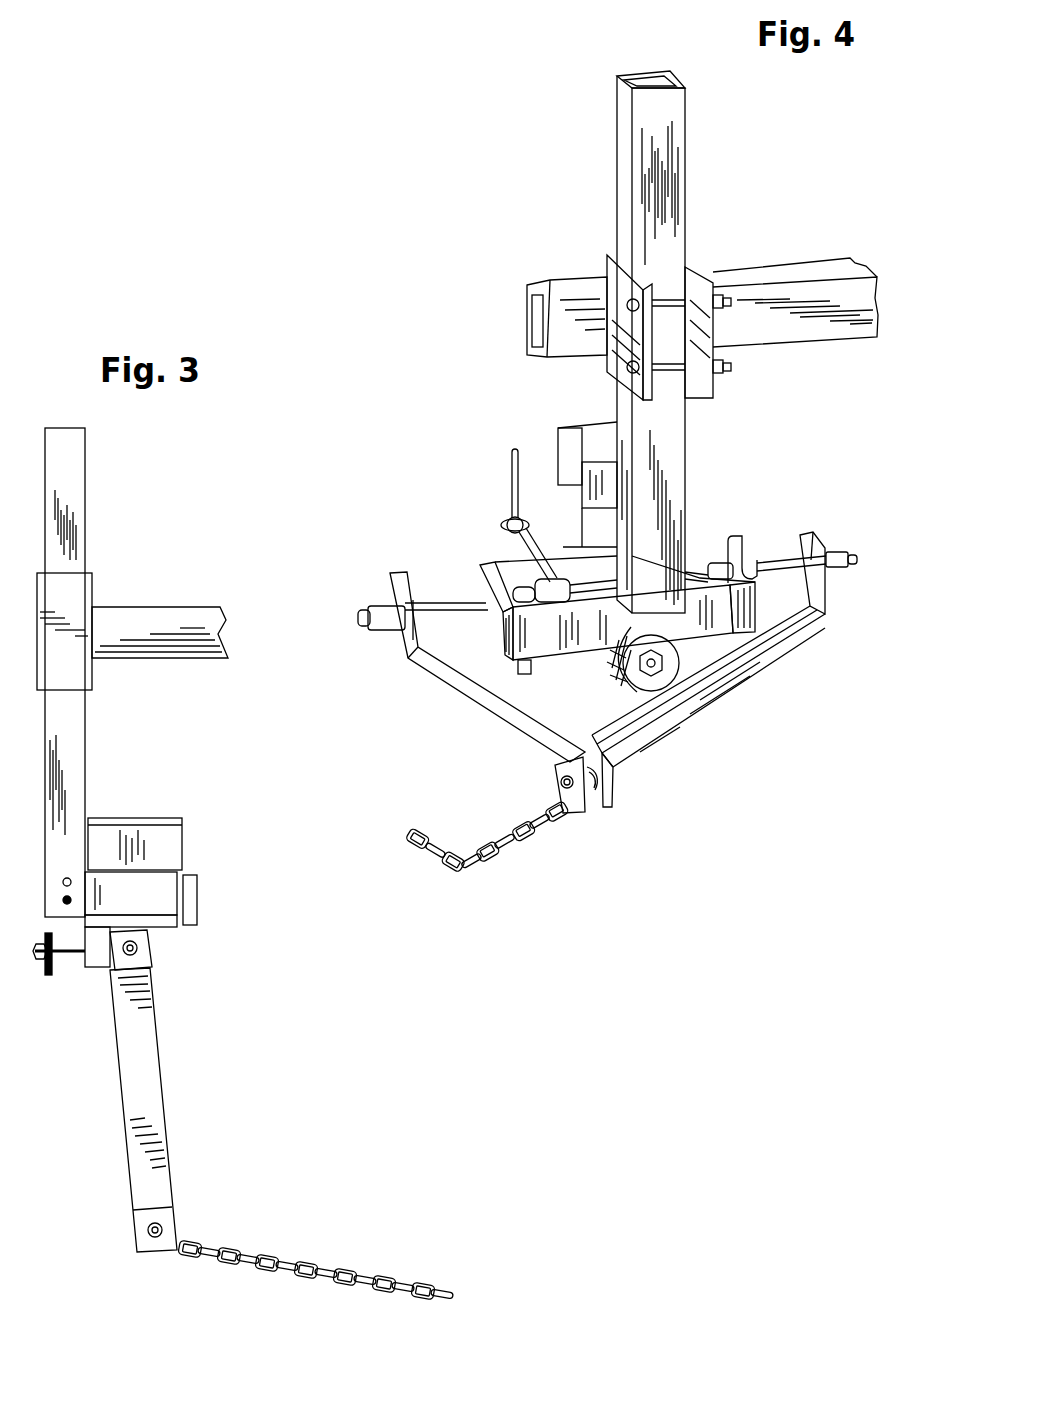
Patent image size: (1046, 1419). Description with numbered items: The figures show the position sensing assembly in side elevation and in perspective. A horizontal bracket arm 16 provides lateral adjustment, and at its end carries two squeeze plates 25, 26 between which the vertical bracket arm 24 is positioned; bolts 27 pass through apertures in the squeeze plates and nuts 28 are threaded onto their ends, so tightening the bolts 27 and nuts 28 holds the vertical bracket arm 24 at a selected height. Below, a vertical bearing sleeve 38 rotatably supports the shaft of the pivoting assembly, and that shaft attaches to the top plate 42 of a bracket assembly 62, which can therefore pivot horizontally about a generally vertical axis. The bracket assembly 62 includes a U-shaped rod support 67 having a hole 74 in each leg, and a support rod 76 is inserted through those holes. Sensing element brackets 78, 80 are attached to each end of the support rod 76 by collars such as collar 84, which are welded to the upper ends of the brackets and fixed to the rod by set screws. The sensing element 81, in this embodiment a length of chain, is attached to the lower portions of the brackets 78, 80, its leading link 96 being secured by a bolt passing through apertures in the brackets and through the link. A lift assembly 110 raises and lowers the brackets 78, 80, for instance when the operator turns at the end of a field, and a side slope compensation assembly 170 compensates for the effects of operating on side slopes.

In FIG. 4, the horizontal bracket arm 16 is at (822, 265).
In FIG. 3, the vertical bracket arm 24 is at (72, 498).
In FIG. 4, the vertical bracket arm 24 is at (671, 117).
In FIG. 4, the squeeze plate 25 is at (610, 362).
In FIG. 4, the squeeze plate 26 is at (694, 250).
In FIG. 4, the bolts 27 is at (630, 290).
In FIG. 4, the nuts 28 is at (728, 292).
In FIG. 4, the vertical bearing sleeve 38 is at (582, 520).
In FIG. 3, the top plate 42 is at (167, 922).
In FIG. 4, the top plate 42 is at (575, 572).
In FIG. 4, the bracket assembly 62 is at (560, 693).
In FIG. 4, the U-shaped rod support 67 is at (735, 537).
In FIG. 3, the hole 74 is at (140, 953).
In FIG. 4, the support rod 76 is at (775, 535).
In FIG. 3, the sensing element bracket 78 is at (155, 1056).
In FIG. 4, the sensing element bracket 78 is at (775, 618).
In FIG. 4, the sensing element bracket 80 is at (458, 695).
In FIG. 3, the sensing element 81 is at (272, 1255).
In FIG. 4, the sensing element 81 is at (527, 845).
In FIG. 4, the collar 84 is at (395, 620).
In FIG. 4, the leading link 96 is at (600, 783).
In FIG. 4, the lift assembly 110 is at (488, 538).
In FIG. 4, the side slope compensation assembly 170 is at (680, 686).